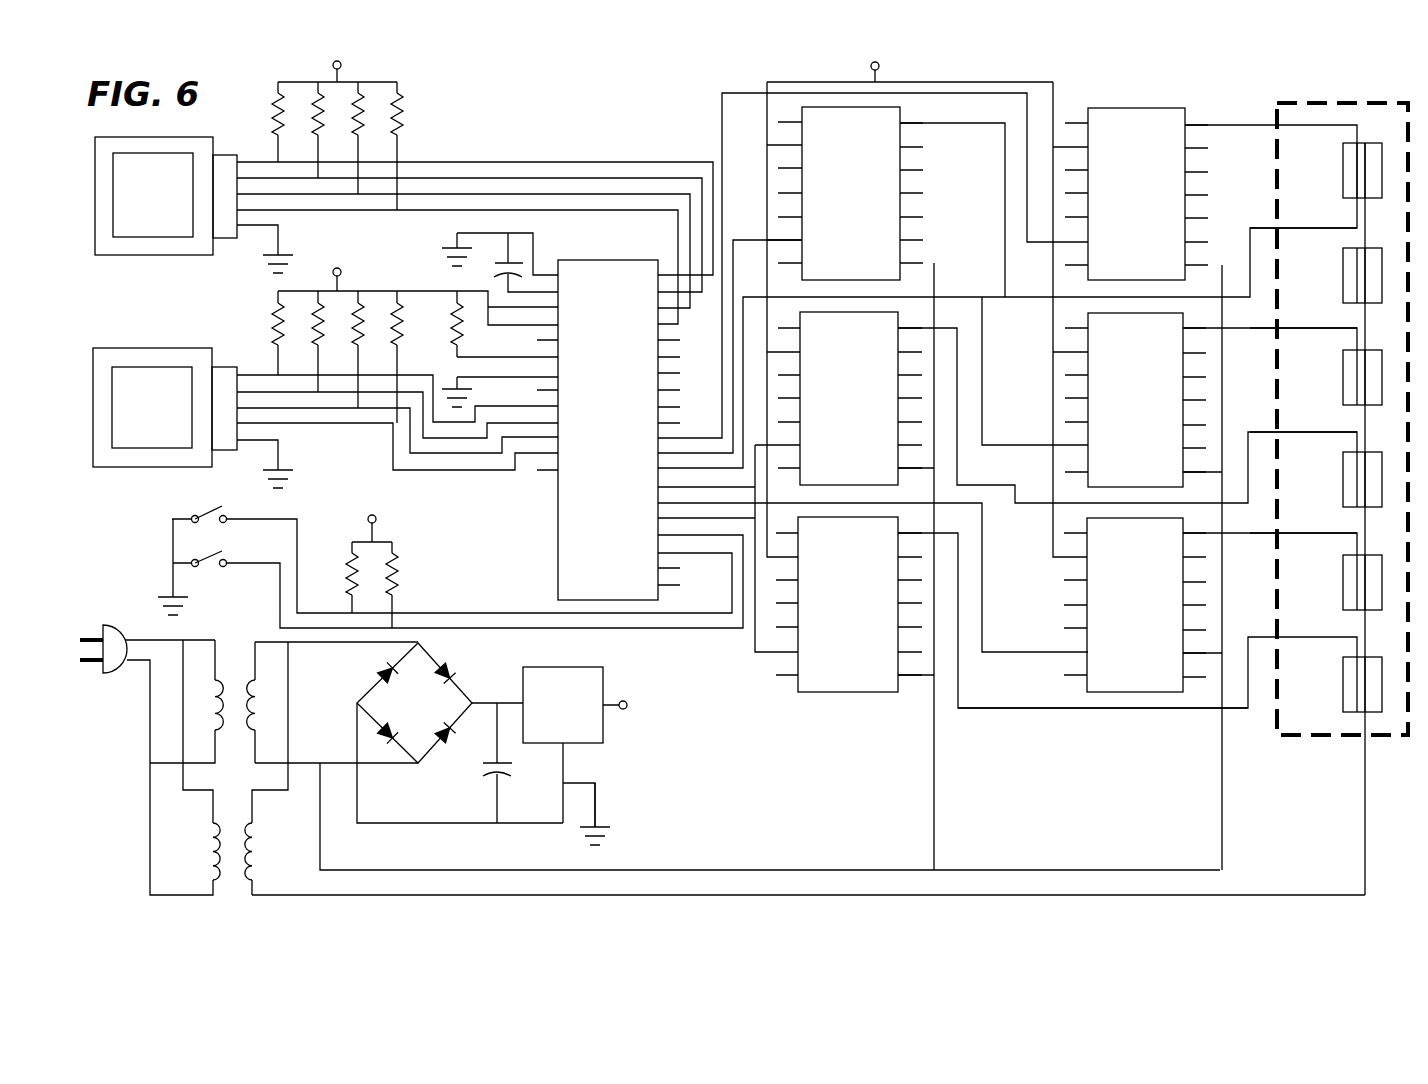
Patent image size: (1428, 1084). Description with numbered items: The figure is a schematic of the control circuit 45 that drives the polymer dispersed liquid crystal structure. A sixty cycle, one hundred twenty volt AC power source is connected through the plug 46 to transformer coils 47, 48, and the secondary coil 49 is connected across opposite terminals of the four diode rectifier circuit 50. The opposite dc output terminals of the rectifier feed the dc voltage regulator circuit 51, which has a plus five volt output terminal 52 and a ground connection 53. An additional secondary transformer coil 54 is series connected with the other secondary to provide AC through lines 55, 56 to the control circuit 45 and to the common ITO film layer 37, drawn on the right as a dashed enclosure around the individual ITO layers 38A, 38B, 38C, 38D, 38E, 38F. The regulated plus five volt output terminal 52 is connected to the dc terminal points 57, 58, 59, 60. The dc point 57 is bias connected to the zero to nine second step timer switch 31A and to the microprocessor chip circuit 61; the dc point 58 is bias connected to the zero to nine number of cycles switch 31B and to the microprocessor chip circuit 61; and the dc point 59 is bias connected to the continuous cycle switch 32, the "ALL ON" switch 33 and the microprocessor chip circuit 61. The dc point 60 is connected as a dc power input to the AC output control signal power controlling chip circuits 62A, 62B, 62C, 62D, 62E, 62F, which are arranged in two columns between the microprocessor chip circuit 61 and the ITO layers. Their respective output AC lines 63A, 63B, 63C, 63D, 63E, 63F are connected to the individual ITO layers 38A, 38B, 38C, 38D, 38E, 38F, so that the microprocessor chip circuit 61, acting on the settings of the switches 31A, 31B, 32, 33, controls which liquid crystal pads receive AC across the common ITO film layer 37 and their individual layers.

The display timer switch 31A is at (165, 136).
The number of cycles switch 31B is at (133, 467).
The continuous cycle switch 32 is at (214, 558).
The "ALL ON" switch 33 is at (211, 509).
The common ITO film layer 37 is at (1366, 610).
The individual ITO layer 38A is at (1353, 710).
The individual ITO layer 38B is at (1355, 607).
The individual ITO layer 38C is at (1355, 505).
The individual ITO layer 38D is at (1355, 405).
The individual ITO layer 38E is at (1355, 303).
The individual ITO layer 38F is at (1355, 198).
The control circuit 45 is at (540, 158).
The plug 46 is at (121, 675).
The transformer coil 47 is at (218, 670).
The transformer coil 48 is at (210, 840).
The secondary coil 49 is at (245, 733).
The four diode rectifier circuit 50 is at (441, 663).
The dc voltage regulator circuit 51 is at (550, 715).
The plus five volt output terminal 52 is at (623, 699).
The ground connection 53 is at (590, 783).
The additional secondary transformer coil 54 is at (253, 852).
The line 55 is at (775, 870).
The line 56 is at (1275, 897).
The dc terminal point 57 is at (333, 65).
The dc terminal point 58 is at (338, 268).
The dc terminal point 59 is at (369, 518).
The dc terminal point 60 is at (871, 66).
The microprocessor chip circuit 61 is at (587, 458).
The AC output control signal power controlling chip circuit 62A is at (819, 614).
The AC output control signal power controlling chip circuit 62B is at (1110, 611).
The AC output control signal power controlling chip circuit 62C is at (824, 416).
The AC output control signal power controlling chip circuit 62D is at (1113, 416).
The AC output control signal power controlling chip circuit 62E is at (832, 205).
The AC output control signal power controlling chip circuit 62F is at (1114, 214).
The output AC line 63A is at (1037, 710).
The output AC line 63B is at (1303, 535).
The output AC line 63C is at (1303, 434).
The output AC line 63D is at (1303, 330).
The output AC line 63E is at (1303, 230).
The output AC line 63F is at (1303, 127).